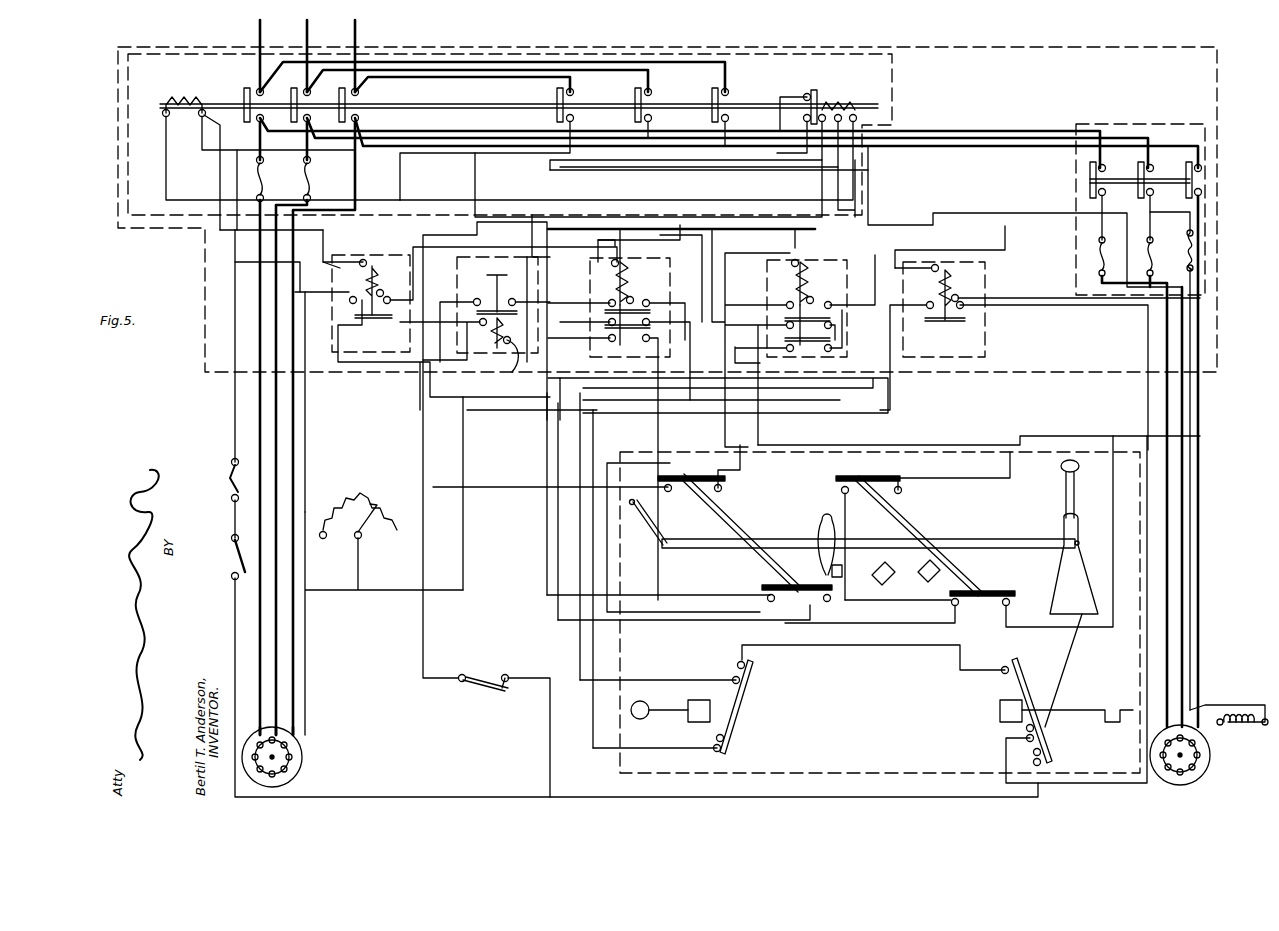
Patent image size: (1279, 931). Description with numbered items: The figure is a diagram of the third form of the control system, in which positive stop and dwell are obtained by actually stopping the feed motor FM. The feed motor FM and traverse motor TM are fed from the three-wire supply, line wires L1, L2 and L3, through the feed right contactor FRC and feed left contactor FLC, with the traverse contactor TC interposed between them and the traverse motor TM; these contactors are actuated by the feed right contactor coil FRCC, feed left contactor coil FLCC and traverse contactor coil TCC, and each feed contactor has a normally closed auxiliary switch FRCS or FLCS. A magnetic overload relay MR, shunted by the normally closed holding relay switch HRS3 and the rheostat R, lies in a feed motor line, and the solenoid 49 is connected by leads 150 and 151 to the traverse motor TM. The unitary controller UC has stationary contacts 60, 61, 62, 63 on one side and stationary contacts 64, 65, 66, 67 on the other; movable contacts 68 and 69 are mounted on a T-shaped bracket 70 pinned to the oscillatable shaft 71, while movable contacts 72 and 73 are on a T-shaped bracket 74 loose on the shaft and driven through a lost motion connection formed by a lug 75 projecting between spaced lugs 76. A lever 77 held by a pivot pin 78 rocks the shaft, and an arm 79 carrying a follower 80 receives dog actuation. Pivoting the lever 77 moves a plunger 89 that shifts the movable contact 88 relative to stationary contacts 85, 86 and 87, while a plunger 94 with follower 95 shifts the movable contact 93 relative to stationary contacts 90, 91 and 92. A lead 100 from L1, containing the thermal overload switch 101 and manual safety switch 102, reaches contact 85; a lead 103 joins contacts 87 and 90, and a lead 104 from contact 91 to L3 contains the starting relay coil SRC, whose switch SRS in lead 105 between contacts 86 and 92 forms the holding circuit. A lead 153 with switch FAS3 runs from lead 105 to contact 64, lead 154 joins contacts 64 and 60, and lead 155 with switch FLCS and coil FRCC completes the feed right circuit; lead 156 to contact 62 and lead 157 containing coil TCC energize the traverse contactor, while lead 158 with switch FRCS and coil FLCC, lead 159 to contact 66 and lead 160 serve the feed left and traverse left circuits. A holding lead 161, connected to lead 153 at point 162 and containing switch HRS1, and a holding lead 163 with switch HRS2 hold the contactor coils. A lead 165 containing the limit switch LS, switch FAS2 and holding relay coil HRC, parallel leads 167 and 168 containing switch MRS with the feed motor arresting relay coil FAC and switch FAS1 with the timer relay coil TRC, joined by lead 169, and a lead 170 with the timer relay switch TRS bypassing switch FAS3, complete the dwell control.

The line wire L1 is at (255, 28).
The line wire L2 is at (303, 28).
The line wire L3 is at (351, 28).
The feed right contactor FRC is at (300, 100).
The feed right contactor coil FRCC is at (196, 96).
The feed right contactor switch FRCS is at (560, 100).
The feed left contactor FLC is at (648, 88).
The feed left contactor switch FLCS is at (825, 76).
The feed left contactor coil FLCC is at (840, 103).
The traverse contactor TC is at (1185, 192).
The traverse contactor coil TCC is at (1205, 246).
The magnetic overload relay MR is at (385, 250).
The magnetic relay switch MRS is at (362, 318).
The timer relay switch TRS is at (488, 323).
The timer relay coil TRC is at (510, 373).
The feed motor arresting relay coil FAC is at (640, 285).
The feed motor arresting relay switch FAS1 is at (572, 268).
The feed motor arresting relay switch FAS2 is at (655, 322).
The feed motor arresting relay switch FAS3 is at (655, 338).
The holding relay coil HRC is at (792, 262).
The holding relay switch HRS1 is at (786, 306).
The holding relay switch HRS2 is at (786, 326).
The holding relay switch HRS3 is at (818, 352).
The starting relay coil SRC is at (945, 270).
The starting relay switch SRS is at (943, 333).
The unitary controller UC is at (731, 457).
The limit switch LS is at (478, 690).
The feed motor FM is at (300, 757).
The traverse motor TM is at (1200, 778).
The rheostat R is at (384, 496).
The solenoid 49 is at (1248, 728).
The stationary contact 60 is at (841, 490).
The stationary contact 61 is at (902, 493).
The stationary contact 62 is at (664, 488).
The stationary contact 63 is at (722, 491).
The stationary contact 64 is at (950, 604).
The stationary contact 65 is at (1010, 605).
The stationary contact 66 is at (766, 596).
The stationary contact 67 is at (830, 602).
The movable contact 68 is at (718, 475).
The movable contact 69 is at (822, 560).
The T-shaped bracket 70 is at (735, 512).
The oscillatable shaft 71 is at (705, 552).
The movable contact 72 is at (868, 467).
The movable contact 73 is at (997, 590).
The T-shaped bracket 74 is at (922, 512).
The lug 75 is at (842, 578).
The spaced lugs 76 is at (920, 568).
The lever 77 is at (1066, 492).
The pivot pin 78 is at (1080, 540).
The arm 79 is at (648, 521).
The follower 80 is at (630, 519).
The stationary contact 85 is at (1042, 756).
The stationary contact 86 is at (1036, 730).
The stationary contact 87 is at (1000, 672).
The movable contact 88 is at (1022, 673).
The plunger 89 is at (1073, 710).
The stationary contact 90 is at (748, 668).
The stationary contact 91 is at (745, 688).
The stationary contact 92 is at (728, 740).
The movable contact 93 is at (745, 710).
The plunger 94 is at (672, 712).
The follower 95 is at (640, 701).
The lead 100 is at (233, 383).
The thermal overload switch 101 is at (231, 462).
The manual safety switch 102 is at (233, 545).
The lead 103 is at (845, 645).
The lead 104 is at (905, 265).
The lead 105 is at (1148, 336).
The lead 150 is at (1205, 708).
The lead 151 is at (1240, 700).
The lead 153 is at (867, 624).
The lead 154 is at (884, 610).
The lead 155 is at (355, 165).
The lead 156 is at (323, 240).
The lead 157 is at (1006, 222).
The lead 158 is at (478, 177).
The lead 159 is at (525, 186).
The lead 160 is at (650, 452).
The lead 161 is at (565, 405).
The point 162 is at (563, 377).
The lead 163 is at (760, 325).
The lead 165 is at (440, 250).
The lead 167 is at (412, 288).
The lead 168 is at (528, 230).
The lead 169 is at (415, 327).
The lead 170 is at (530, 290).